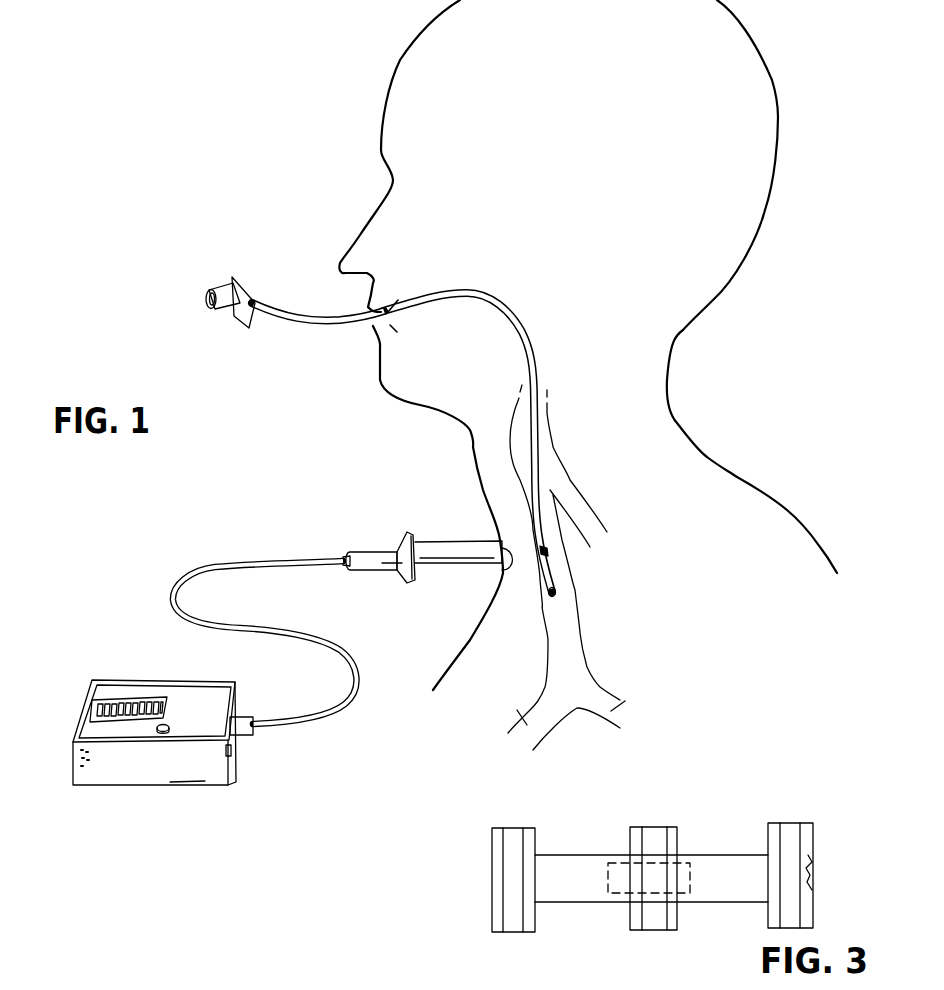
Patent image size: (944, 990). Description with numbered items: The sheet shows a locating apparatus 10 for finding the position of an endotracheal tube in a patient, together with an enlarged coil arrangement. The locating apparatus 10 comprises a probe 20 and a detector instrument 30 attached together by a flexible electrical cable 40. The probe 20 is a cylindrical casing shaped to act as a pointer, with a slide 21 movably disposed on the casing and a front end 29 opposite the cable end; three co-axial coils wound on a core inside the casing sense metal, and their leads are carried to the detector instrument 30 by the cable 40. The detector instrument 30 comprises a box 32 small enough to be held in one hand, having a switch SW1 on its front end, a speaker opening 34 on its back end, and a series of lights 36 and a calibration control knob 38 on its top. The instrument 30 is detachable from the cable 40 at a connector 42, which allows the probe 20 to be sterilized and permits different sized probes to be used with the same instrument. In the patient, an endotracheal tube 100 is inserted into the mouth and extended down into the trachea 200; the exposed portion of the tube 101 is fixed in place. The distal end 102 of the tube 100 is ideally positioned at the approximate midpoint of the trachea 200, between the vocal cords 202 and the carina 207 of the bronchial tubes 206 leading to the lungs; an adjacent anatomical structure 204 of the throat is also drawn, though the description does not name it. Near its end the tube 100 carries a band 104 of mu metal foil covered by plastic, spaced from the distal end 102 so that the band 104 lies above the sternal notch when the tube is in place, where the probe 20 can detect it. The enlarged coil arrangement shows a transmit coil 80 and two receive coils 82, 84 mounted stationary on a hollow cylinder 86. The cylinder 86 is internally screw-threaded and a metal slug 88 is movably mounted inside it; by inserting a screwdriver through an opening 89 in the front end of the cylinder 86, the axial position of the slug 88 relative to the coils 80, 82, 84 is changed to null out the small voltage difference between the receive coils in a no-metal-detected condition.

In FIG. 1, the locating apparatus 10 is at (207, 527).
In FIG. 1, the probe 20 is at (460, 533).
In FIG. 1, the slide 21 is at (403, 532).
In FIG. 1, the front end 29 is at (505, 572).
In FIG. 1, the detector instrument 30 is at (170, 748).
In FIG. 1, the box 32 is at (190, 772).
In FIG. 1, the speaker opening 34 is at (75, 755).
In FIG. 1, the series of lights 36 is at (115, 697).
In FIG. 1, the calibration control knob 38 is at (167, 723).
In FIG. 1, the flexible electrical cable 40 is at (334, 638).
In FIG. 1, the connector 42 is at (248, 718).
In FIG. 1, the switch SW1 is at (233, 750).
In FIG. 1, the endotracheal tube 100 is at (483, 296).
In FIG. 1, the exposed portion of the tube 101 is at (323, 330).
In FIG. 1, the distal end 102 is at (557, 597).
In FIG. 1, the band 104 is at (542, 556).
In FIG. 1, the trachea 200 is at (577, 585).
In FIG. 1, the vocal cords 202 is at (517, 452).
In FIG. 1, the larynx 204 is at (568, 475).
In FIG. 1, the bronchial tubes 206 is at (520, 722).
In FIG. 1, the carina 207 is at (582, 712).
In FIG. 3, the transmit coil 80 is at (652, 833).
In FIG. 3, the receive coil 82 is at (510, 833).
In FIG. 3, the receive coil 84 is at (790, 830).
In FIG. 3, the hollow cylinder 86 is at (728, 893).
In FIG. 3, the metal slug 88 is at (608, 895).
In FIG. 3, the opening 89 is at (813, 870).